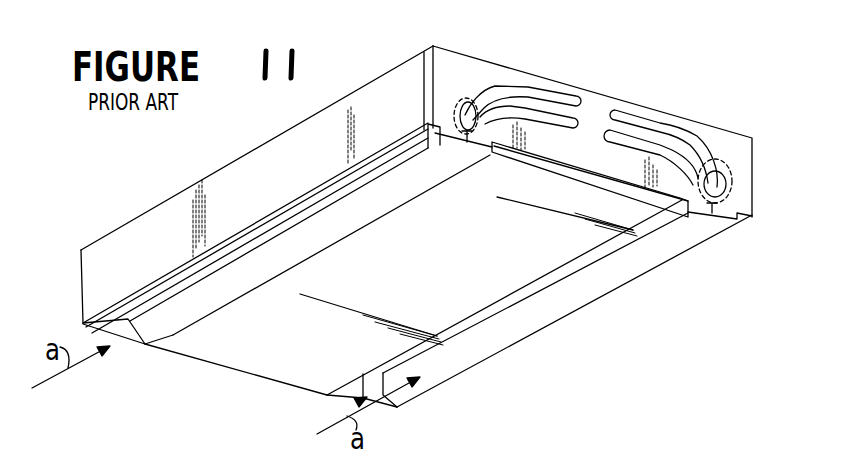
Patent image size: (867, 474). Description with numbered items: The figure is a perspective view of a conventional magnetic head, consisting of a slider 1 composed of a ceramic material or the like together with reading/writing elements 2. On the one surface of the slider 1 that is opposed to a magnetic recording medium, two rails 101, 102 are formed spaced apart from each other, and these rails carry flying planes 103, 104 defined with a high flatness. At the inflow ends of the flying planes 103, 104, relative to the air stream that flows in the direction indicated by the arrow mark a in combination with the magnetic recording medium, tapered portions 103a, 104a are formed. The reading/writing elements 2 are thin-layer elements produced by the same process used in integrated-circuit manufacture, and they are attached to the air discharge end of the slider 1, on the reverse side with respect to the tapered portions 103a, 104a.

The slider 1 is at (223, 210).
The reading/writing elements 2 is at (456, 106).
The rail 101 is at (170, 288).
The rail 102 is at (548, 308).
The flying plane 103 is at (268, 245).
The tapered portion 103a is at (137, 326).
The flying plane 104 is at (592, 265).
The tapered portion 104a is at (363, 374).